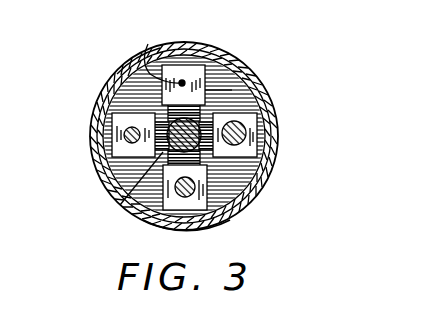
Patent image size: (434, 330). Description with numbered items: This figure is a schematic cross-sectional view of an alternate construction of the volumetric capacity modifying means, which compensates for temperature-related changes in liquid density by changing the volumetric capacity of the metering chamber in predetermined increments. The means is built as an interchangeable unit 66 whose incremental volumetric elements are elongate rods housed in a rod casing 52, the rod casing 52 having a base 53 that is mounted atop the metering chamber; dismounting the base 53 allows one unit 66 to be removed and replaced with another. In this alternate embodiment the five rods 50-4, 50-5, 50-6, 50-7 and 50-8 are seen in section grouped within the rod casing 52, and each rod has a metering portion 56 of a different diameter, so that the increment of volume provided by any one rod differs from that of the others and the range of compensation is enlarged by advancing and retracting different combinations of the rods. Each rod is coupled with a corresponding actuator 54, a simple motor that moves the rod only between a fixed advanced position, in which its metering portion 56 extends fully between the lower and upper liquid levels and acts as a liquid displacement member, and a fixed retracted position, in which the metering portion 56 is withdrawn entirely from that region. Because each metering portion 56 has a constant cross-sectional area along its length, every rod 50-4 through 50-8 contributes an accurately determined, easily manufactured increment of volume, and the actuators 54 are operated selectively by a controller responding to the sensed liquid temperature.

The unit 66 is at (105, 73).
The actuator 54 is at (117, 74).
The metering portion 56 is at (182, 80).
The rod 50-4 is at (212, 63).
The rod 50-5 is at (100, 118).
The rod 50-6 is at (208, 193).
The rod 50-7 is at (255, 140).
The rod 50-8 is at (223, 97).
The rod casing 52 is at (100, 165).
The base 53 is at (143, 220).